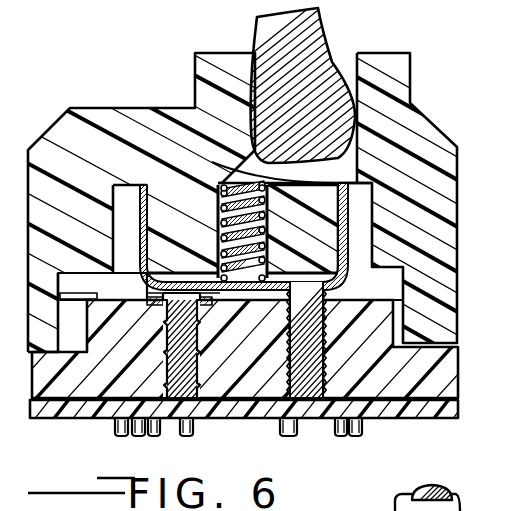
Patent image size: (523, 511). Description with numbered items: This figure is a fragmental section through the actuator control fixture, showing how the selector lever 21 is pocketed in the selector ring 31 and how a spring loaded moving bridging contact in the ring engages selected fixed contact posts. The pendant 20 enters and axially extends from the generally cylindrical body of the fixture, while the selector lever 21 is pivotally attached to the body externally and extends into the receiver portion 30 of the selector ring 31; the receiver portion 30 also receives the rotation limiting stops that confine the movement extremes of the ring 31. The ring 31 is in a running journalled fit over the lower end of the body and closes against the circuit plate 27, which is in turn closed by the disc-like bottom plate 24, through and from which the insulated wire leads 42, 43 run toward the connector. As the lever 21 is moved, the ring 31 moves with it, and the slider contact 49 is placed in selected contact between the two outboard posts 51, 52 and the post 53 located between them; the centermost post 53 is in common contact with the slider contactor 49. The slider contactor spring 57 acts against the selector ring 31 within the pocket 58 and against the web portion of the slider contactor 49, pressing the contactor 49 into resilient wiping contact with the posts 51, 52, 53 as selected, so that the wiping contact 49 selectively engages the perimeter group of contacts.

The pendant 20 is at (440, 493).
The selector lever 21 is at (312, 58).
The bottom plate 24 is at (247, 420).
The circuit plate 27 is at (453, 373).
The receiver portion 30 is at (408, 76).
The selector ring 31 is at (255, 229).
The insulated wire lead 42 is at (378, 434).
The insulated wire lead 43 is at (110, 437).
The slider contact 49 is at (346, 228).
The outboard post 51 is at (342, 282).
The outboard post 52 is at (92, 292).
The post 53 is at (190, 279).
The slider contactor spring 57 is at (225, 182).
The pocket 58 is at (268, 222).